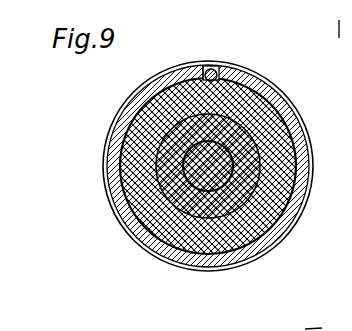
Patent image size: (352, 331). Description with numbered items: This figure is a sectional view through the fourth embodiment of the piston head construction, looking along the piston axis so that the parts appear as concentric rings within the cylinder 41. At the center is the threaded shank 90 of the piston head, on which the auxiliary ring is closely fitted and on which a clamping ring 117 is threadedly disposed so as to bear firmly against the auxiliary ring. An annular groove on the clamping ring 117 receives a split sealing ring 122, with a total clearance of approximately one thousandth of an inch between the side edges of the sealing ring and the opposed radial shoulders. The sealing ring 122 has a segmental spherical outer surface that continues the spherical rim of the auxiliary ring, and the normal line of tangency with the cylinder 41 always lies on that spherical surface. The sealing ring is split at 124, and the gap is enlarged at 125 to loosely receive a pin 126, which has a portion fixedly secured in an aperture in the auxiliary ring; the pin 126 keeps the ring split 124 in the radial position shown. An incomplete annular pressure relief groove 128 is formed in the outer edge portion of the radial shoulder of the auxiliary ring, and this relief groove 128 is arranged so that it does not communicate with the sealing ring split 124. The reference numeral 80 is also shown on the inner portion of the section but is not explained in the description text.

The inner hub 80 is at (133, 217).
The clamping ring 117 is at (150, 130).
The threaded shank 90 is at (275, 118).
The split sealing ring 122 is at (219, 262).
The cylinder 41 is at (298, 203).
The pressure relief groove 128 is at (263, 79).
The pin 126 is at (221, 70).
The enlarged gap 125 is at (204, 67).
The ring split 124 is at (212, 67).